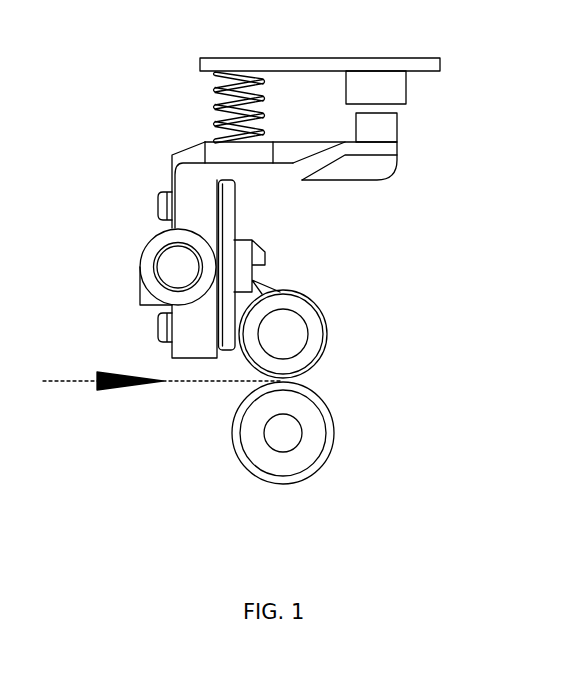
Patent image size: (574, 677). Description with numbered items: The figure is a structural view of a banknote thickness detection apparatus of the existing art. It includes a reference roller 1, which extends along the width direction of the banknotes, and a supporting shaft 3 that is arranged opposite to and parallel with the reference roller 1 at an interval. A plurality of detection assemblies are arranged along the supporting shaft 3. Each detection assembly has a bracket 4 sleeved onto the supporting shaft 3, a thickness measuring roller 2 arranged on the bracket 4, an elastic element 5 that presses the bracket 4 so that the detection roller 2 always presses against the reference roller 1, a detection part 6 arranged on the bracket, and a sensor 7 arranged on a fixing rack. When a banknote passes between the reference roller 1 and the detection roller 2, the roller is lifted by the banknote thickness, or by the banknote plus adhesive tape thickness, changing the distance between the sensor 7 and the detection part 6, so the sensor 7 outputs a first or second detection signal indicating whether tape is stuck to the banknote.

The reference roller 1 is at (335, 433).
The thickness measuring roller 2 is at (328, 336).
The supporting shaft 3 is at (178, 268).
The bracket 4 is at (187, 207).
The elastic element 5 is at (225, 102).
The detection part 6 is at (377, 115).
The sensor 7 is at (375, 100).